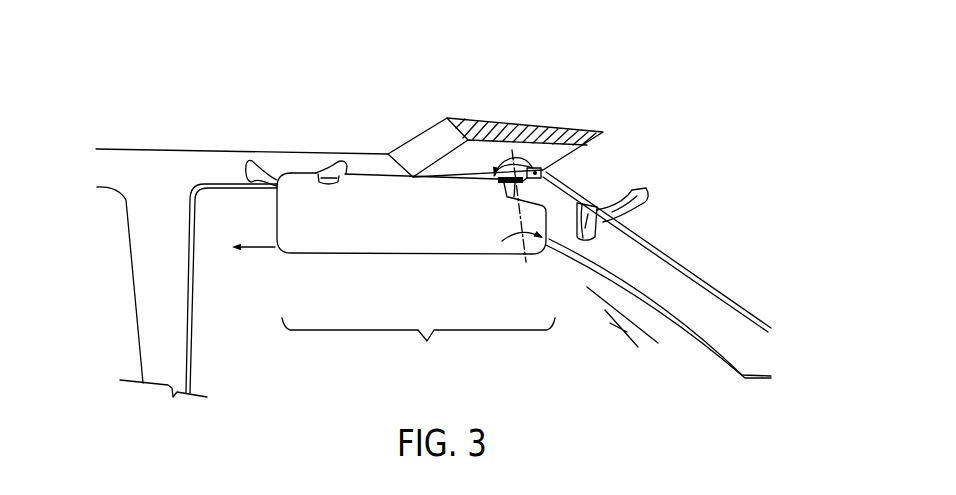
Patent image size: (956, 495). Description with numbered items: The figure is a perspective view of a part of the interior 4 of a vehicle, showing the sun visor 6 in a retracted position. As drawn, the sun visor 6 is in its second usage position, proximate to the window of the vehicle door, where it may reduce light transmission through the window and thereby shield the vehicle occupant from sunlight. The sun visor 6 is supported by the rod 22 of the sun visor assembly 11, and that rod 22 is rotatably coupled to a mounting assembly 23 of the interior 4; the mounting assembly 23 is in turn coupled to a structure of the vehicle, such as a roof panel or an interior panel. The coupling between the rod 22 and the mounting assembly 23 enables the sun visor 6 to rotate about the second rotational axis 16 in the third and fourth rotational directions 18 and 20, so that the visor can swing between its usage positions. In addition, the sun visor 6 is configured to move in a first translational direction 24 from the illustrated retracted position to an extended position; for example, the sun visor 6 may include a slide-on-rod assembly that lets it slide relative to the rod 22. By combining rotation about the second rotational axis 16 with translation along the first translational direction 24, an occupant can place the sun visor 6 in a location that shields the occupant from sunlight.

The interior 4 is at (240, 208).
The sun visor 6 is at (419, 255).
The sun visor assembly 11 is at (404, 258).
The second rotational axis 16 is at (526, 261).
The third rotational direction 18 is at (503, 166).
The fourth rotational direction 20 is at (513, 233).
The rod 22 is at (506, 194).
The mounting assembly 23 is at (527, 178).
The first translational direction 24 is at (262, 249).